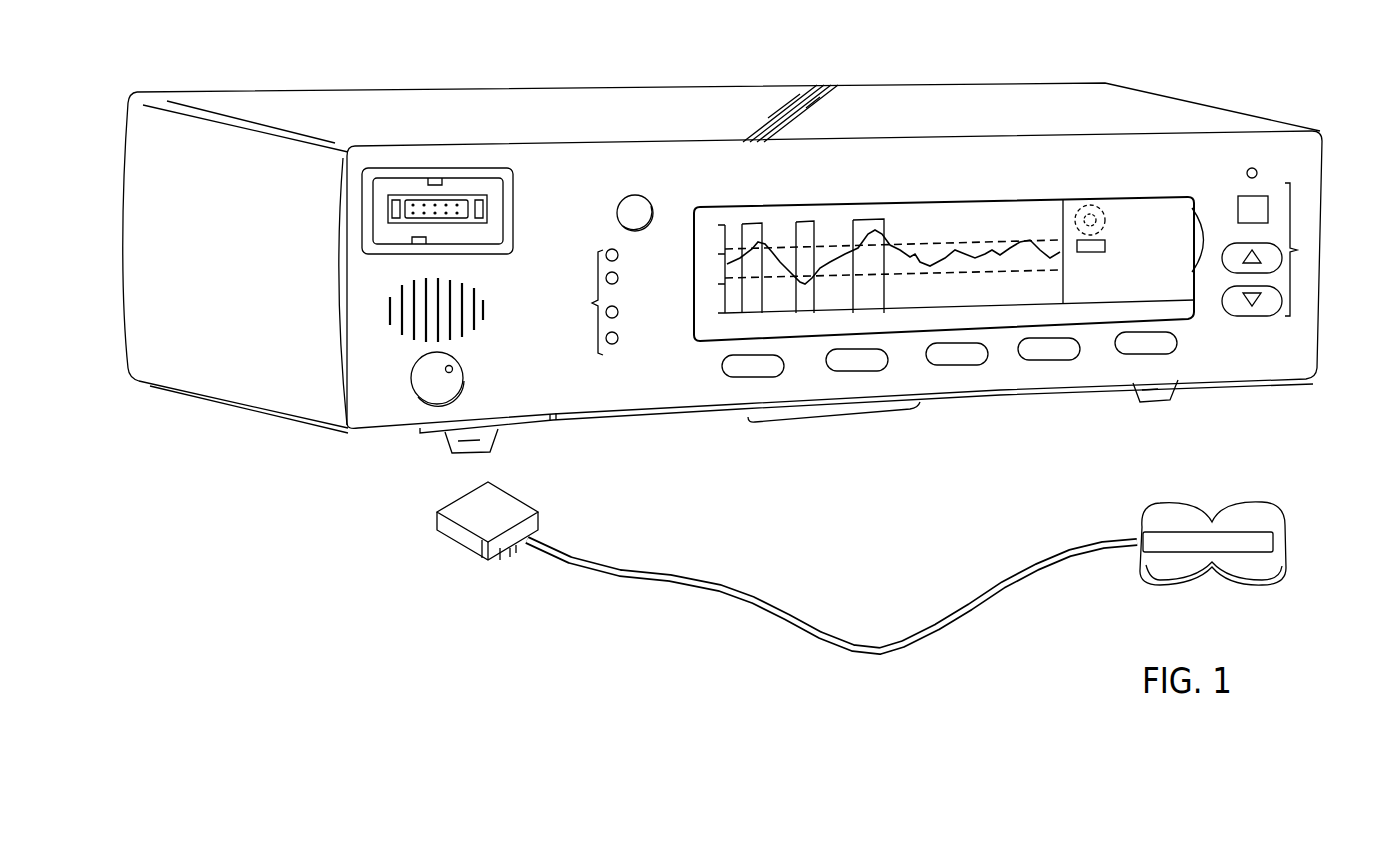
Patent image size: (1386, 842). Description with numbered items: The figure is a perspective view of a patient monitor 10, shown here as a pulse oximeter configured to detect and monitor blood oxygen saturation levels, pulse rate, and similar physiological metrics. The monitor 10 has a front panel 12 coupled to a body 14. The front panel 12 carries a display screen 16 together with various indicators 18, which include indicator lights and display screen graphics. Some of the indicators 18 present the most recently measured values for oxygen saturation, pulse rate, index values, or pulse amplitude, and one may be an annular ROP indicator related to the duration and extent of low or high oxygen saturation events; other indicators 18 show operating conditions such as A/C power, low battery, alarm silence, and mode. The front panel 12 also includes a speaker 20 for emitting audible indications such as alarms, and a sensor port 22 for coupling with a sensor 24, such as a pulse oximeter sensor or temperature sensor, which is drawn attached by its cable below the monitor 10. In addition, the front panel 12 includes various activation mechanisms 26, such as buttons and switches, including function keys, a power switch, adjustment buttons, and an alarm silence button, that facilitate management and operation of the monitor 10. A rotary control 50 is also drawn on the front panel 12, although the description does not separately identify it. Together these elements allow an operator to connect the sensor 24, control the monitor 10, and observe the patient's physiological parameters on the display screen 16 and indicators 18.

The patient monitor 10 is at (705, 57).
The front panel 12 is at (677, 400).
The body 14 is at (174, 360).
The display screen 16 is at (990, 190).
The indicators 18 is at (598, 302).
The speaker 20 is at (471, 288).
The sensor port 22 is at (438, 179).
The sensor 24 is at (942, 603).
The activation mechanisms 26 is at (637, 197).
The control knob 50 is at (463, 380).